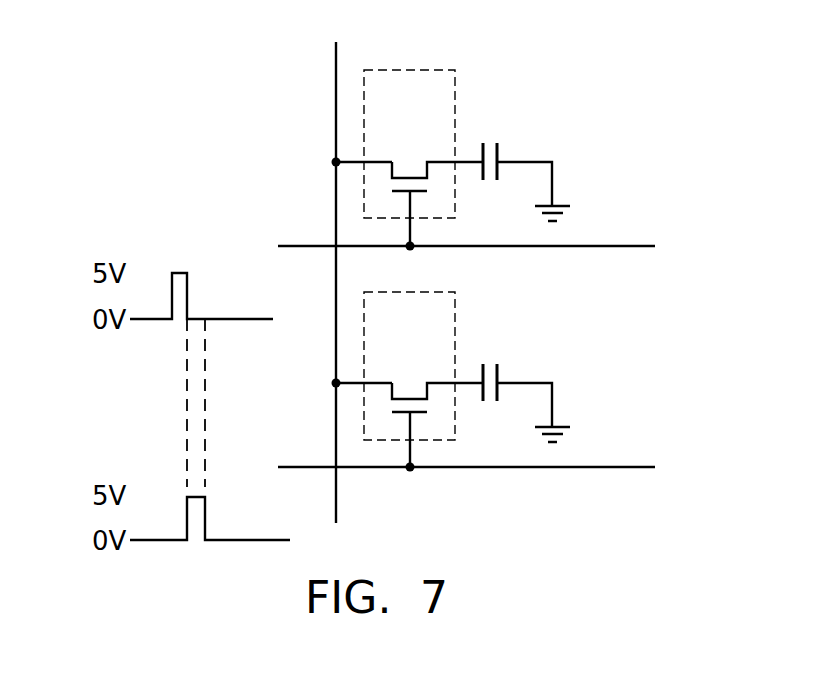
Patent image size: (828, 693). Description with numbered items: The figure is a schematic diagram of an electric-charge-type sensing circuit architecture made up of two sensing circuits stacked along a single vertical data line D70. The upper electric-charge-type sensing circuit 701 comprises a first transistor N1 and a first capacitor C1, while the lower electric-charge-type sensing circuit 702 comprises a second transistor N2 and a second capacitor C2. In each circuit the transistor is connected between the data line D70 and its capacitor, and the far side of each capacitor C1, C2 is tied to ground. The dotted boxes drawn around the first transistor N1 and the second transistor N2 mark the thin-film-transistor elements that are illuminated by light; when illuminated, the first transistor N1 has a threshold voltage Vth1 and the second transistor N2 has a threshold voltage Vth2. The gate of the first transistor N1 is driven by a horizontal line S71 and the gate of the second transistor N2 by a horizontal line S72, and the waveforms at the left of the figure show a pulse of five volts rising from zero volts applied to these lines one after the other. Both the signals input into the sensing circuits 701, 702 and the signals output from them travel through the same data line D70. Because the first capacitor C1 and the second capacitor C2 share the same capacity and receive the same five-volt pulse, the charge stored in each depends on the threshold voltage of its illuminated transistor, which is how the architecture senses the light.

The data line D70 is at (336, 267).
The first scan line S71 is at (441, 246).
The second scan line S72 is at (441, 467).
The electric-charge-type sensing circuit 701 is at (560, 110).
The electric-charge-type sensing circuit 702 is at (562, 330).
The first transistor N1 is at (408, 160).
The second transistor N2 is at (408, 381).
The first capacitor C1 is at (491, 141).
The second capacitor C2 is at (491, 362).